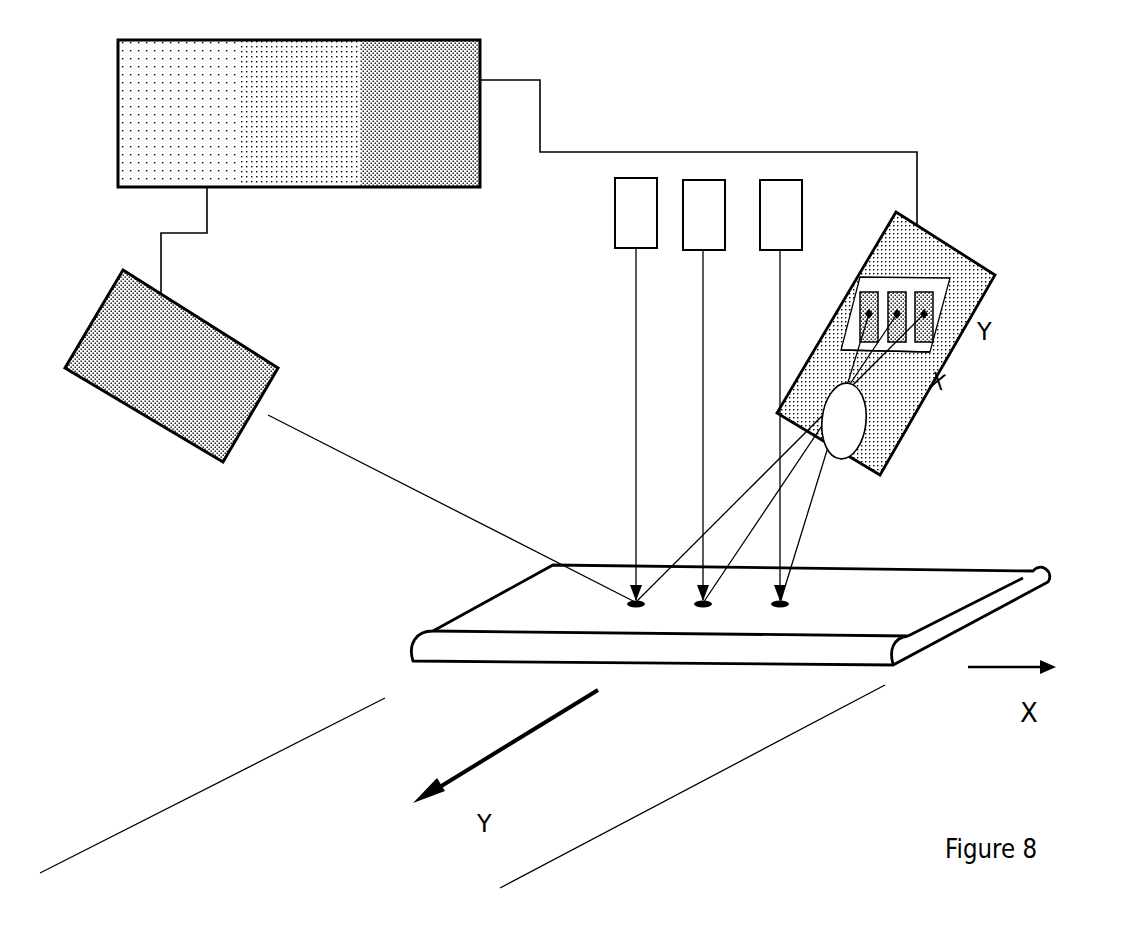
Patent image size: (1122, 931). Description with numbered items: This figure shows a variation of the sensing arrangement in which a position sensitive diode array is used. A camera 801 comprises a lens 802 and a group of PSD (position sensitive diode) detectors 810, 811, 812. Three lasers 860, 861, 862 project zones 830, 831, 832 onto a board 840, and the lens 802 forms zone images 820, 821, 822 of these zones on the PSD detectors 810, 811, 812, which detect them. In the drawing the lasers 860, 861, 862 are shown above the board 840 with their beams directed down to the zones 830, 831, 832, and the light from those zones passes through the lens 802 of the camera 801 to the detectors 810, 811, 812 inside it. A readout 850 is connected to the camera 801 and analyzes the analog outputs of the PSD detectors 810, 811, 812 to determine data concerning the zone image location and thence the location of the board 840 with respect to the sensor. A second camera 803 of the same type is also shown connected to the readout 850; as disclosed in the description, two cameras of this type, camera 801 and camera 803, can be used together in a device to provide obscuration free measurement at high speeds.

The camera 801 is at (983, 248).
The lens 802 is at (843, 460).
The camera 803 is at (351, 436).
The PSD detector 810 is at (866, 282).
The PSD detector 811 is at (903, 360).
The PSD detector 812 is at (930, 312).
The zone image 820 is at (867, 290).
The zone image 821 is at (894, 290).
The zone image 822 is at (920, 292).
The zone 830 is at (637, 609).
The zone 831 is at (706, 609).
The zone 832 is at (796, 610).
The board 840 is at (480, 605).
The readout 850 is at (299, 113).
The laser 860 is at (636, 389).
The laser 861 is at (704, 390).
The laser 862 is at (781, 390).